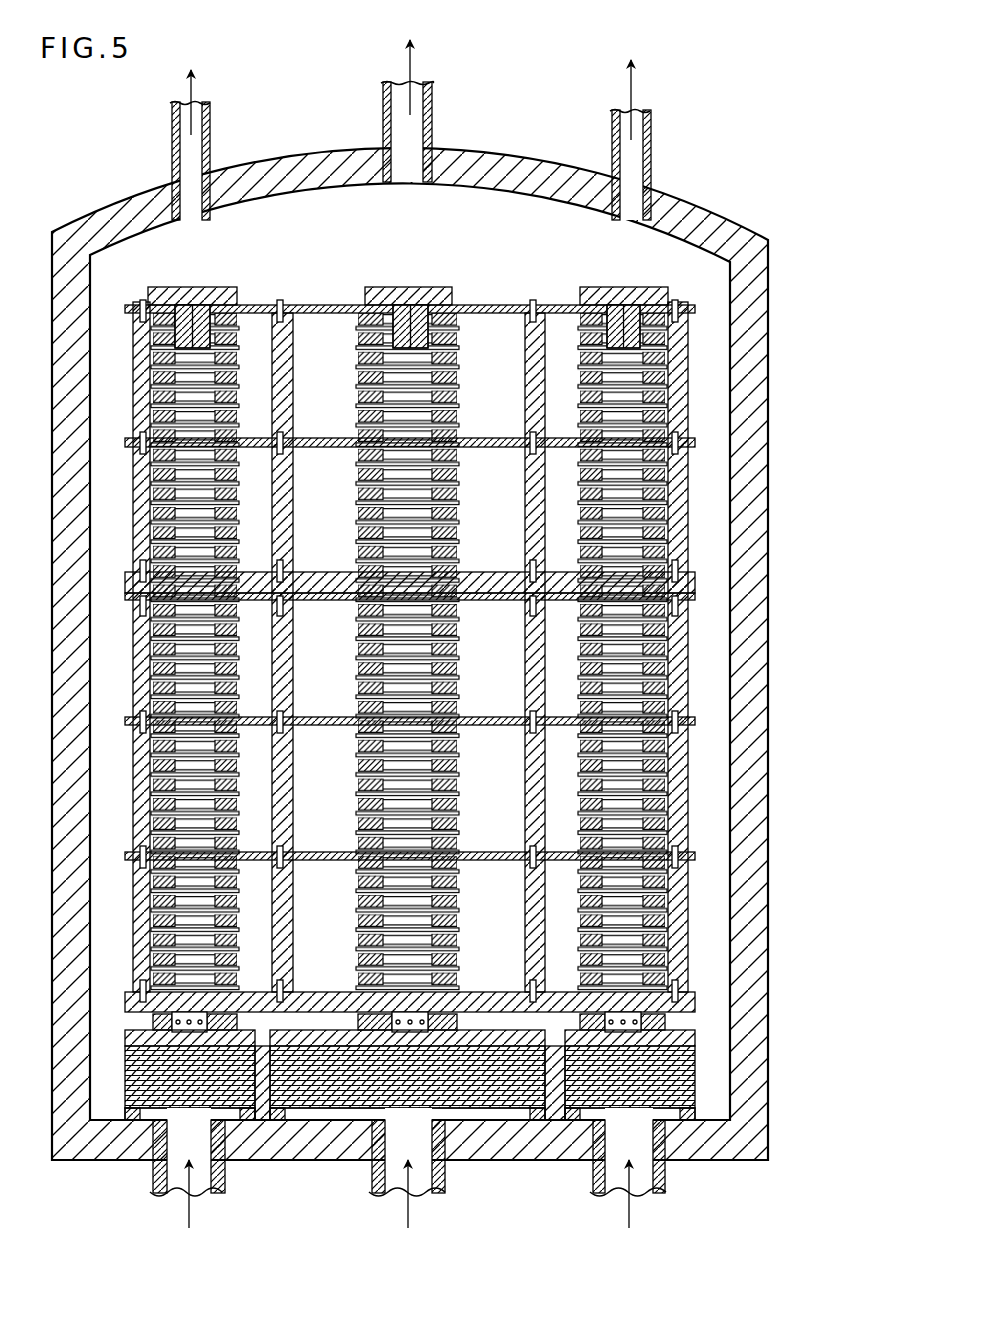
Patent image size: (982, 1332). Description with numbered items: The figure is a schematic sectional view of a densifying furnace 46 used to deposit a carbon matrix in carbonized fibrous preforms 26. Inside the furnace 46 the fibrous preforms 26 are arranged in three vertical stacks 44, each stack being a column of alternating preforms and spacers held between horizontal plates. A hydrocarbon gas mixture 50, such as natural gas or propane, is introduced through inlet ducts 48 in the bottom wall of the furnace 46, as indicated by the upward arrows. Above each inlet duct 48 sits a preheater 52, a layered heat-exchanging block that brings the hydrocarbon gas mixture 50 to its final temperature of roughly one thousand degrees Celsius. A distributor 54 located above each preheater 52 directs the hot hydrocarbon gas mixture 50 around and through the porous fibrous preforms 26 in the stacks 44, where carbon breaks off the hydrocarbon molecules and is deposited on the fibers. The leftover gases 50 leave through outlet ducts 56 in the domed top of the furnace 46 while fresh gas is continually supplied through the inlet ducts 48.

The densifying furnace 46 is at (113, 203).
The outlet ducts 56 is at (211, 126).
The stacks 44 is at (236, 352).
The fibrous preforms 26 is at (357, 410).
The hydrocarbon gas mixture 50 is at (704, 516).
The distributor 54 is at (156, 1022).
The preheater 52 is at (700, 1075).
The inlet ducts 48 is at (227, 1181).